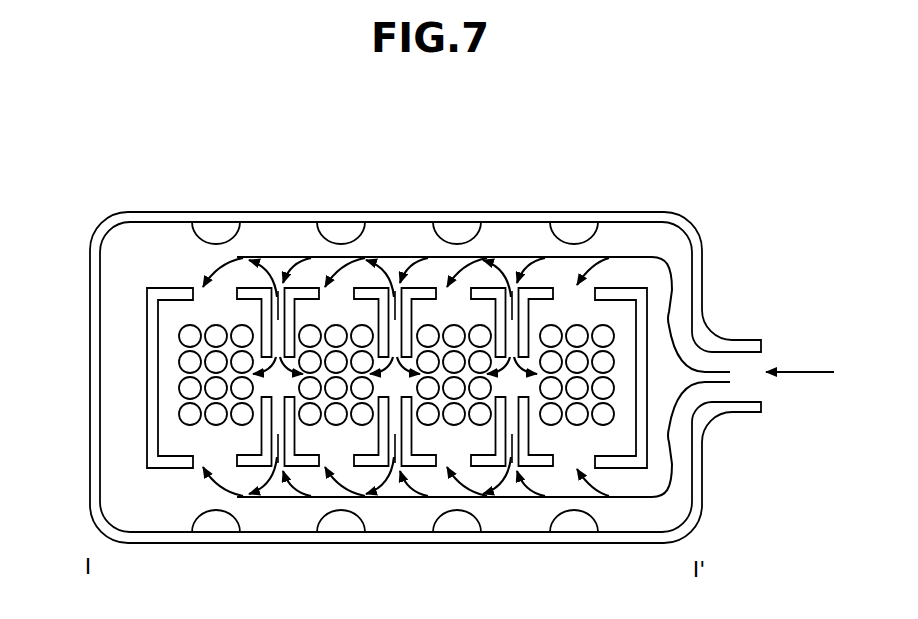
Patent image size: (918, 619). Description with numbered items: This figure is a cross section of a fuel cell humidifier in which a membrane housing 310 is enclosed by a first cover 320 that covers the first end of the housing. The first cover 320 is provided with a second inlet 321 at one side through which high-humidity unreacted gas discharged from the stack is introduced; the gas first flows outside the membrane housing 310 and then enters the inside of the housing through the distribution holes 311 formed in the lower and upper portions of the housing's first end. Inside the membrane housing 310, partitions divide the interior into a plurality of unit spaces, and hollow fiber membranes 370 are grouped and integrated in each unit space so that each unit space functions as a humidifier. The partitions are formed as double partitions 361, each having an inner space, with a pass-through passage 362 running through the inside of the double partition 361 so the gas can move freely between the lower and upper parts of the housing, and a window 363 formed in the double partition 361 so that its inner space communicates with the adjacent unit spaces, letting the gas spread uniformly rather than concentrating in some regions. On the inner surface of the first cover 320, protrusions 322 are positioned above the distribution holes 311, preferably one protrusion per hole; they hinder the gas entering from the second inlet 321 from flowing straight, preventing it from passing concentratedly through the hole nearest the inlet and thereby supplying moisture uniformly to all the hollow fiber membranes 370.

The membrane housing 310 is at (147, 328).
The distribution hole 311 is at (568, 292).
The first cover 320 is at (213, 212).
The second inlet 321 is at (755, 370).
The protrusion 322 is at (341, 233).
The double partition 361 is at (497, 434).
The pass-through passage 362 is at (513, 292).
The window 363 is at (265, 382).
The hollow fiber membrane 370 is at (190, 415).